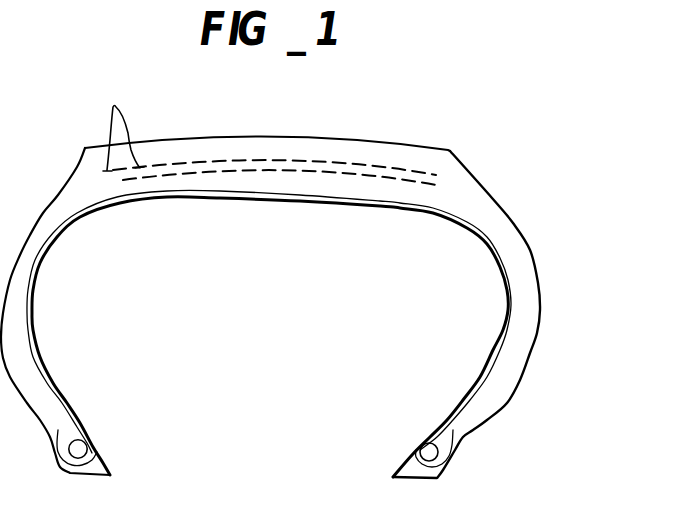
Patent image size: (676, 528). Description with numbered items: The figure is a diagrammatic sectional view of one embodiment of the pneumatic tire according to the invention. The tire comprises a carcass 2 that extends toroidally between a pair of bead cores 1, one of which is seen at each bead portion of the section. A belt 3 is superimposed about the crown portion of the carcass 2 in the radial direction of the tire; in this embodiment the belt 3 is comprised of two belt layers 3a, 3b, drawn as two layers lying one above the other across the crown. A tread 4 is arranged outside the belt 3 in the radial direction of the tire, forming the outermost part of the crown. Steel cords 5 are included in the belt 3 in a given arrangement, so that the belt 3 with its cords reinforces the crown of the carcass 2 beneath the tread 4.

The bead cores 1 is at (82, 449).
The carcass 2 is at (498, 243).
The belt 3 is at (274, 122).
The belt layer 3a is at (427, 93).
The belt layer 3b is at (383, 168).
The tread 4 is at (240, 138).
The steel cords 5 is at (123, 127).